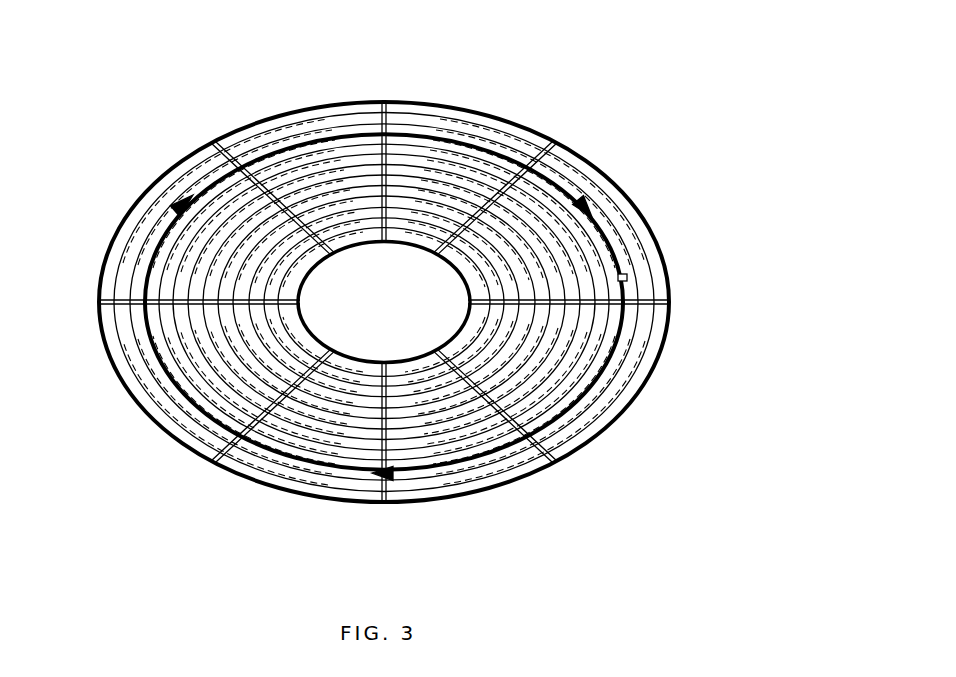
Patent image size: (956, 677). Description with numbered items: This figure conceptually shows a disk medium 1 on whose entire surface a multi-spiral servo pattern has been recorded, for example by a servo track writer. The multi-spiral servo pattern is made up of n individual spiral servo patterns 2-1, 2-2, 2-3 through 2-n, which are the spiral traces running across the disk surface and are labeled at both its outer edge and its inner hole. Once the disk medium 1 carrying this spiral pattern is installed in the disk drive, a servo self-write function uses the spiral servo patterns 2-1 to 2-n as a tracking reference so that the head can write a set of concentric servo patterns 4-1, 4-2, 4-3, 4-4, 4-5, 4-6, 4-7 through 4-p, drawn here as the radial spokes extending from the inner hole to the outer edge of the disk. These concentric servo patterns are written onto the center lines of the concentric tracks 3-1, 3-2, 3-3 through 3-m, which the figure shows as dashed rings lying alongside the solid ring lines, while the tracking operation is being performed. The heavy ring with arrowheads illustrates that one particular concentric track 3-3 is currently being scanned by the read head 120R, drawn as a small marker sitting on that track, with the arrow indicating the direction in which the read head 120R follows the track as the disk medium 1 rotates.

The disk medium 1 is at (625, 192).
The read head 120R is at (627, 276).
The spiral servo pattern 2-1 is at (583, 158).
The spiral servo pattern 2-2 is at (593, 442).
The spiral servo pattern 2-3 is at (180, 448).
The spiral servo pattern 2-n is at (170, 172).
The concentric track 3-1 is at (577, 165).
The concentric track 3-2 is at (553, 148).
The concentric track 3-3 is at (627, 327).
The concentric track 3-m is at (463, 247).
The concentric servo pattern 4-1 is at (662, 300).
The concentric servo pattern 4-2 is at (548, 468).
The concentric servo pattern 4-3 is at (388, 500).
The concentric servo pattern 4-4 is at (222, 455).
The concentric servo pattern 4-5 is at (98, 288).
The concentric servo pattern 4-6 is at (216, 142).
The concentric servo pattern 4-7 is at (378, 100).
The concentric servo pattern 4-p is at (503, 192).